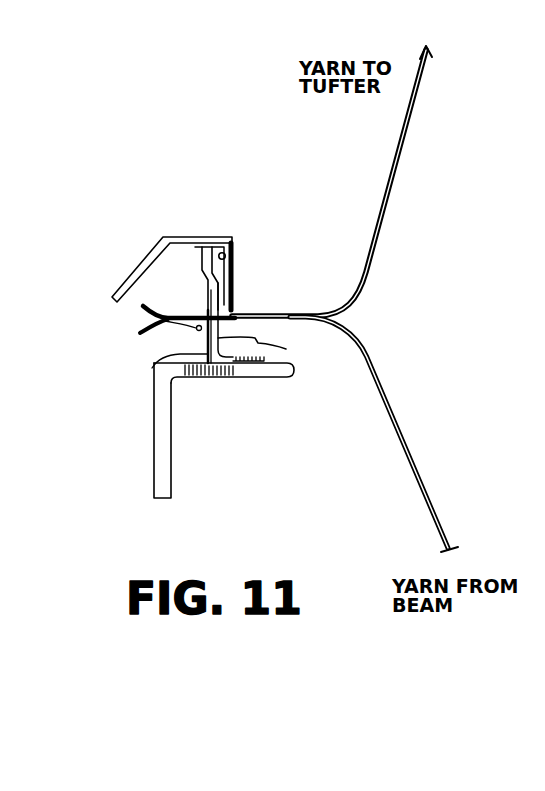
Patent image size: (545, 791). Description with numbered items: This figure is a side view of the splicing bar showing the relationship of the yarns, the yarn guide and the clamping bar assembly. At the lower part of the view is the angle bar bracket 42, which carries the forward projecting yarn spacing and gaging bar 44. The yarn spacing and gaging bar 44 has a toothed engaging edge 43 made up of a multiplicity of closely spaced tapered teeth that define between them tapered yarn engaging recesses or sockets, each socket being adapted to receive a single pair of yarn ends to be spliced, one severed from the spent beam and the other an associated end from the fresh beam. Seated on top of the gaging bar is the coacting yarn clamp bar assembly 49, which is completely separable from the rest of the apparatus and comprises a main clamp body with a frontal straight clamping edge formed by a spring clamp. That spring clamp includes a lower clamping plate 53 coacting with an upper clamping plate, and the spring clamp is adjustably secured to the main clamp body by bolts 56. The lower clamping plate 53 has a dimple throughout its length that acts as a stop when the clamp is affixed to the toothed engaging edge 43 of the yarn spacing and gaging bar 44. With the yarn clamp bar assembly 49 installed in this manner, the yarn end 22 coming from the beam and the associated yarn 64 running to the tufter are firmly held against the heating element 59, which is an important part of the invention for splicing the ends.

The yarn end 22 is at (403, 432).
The angle bar bracket 42 is at (153, 465).
The toothed engaging edge 43 is at (286, 349).
The yarn spacing and gaging bar 44 is at (158, 363).
The yarn clamp bar assembly 49 is at (133, 277).
The lower clamping plate 53 is at (188, 237).
The bolts 56 is at (235, 252).
The heating element 59 is at (200, 333).
The yarn to tufter 64 is at (382, 230).